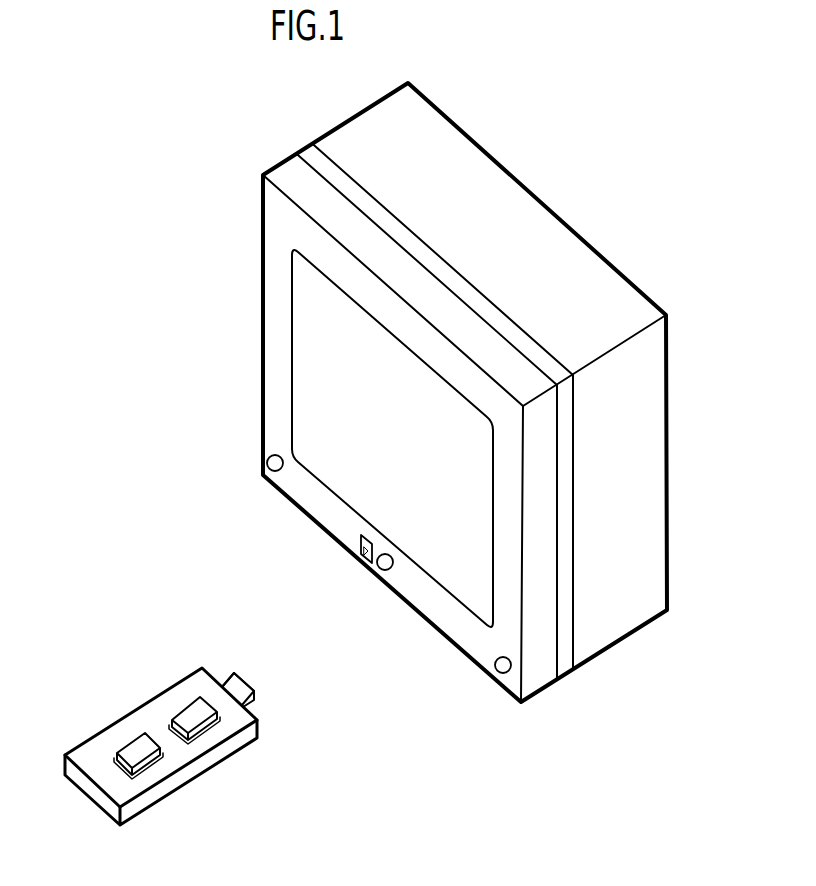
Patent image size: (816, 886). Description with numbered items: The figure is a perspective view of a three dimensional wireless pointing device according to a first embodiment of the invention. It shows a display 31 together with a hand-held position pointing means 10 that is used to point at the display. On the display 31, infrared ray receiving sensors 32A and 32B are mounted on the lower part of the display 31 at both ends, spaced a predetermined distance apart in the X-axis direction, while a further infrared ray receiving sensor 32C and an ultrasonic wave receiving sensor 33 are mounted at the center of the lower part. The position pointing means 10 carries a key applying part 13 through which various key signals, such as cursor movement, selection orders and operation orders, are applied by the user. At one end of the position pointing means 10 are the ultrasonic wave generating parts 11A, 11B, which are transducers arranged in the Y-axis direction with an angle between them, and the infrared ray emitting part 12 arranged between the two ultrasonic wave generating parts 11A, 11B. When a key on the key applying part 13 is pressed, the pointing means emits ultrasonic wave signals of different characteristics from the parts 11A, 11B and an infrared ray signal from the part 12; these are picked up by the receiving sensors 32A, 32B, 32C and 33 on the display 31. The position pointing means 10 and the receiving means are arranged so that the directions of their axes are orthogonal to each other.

The position pointing means 10 is at (83, 748).
The ultrasonic wave generating part 11A is at (232, 677).
The ultrasonic wave generating part 11B is at (244, 682).
The infrared ray emitting part 12 is at (228, 680).
The key applying part 13 is at (132, 753).
The display 31 is at (667, 464).
The infrared ray receiving sensor 32A is at (273, 472).
The infrared ray receiving sensor 32B is at (499, 674).
The infrared ray receiving sensor 32C is at (384, 571).
The ultrasonic wave receiving sensor 33 is at (360, 557).